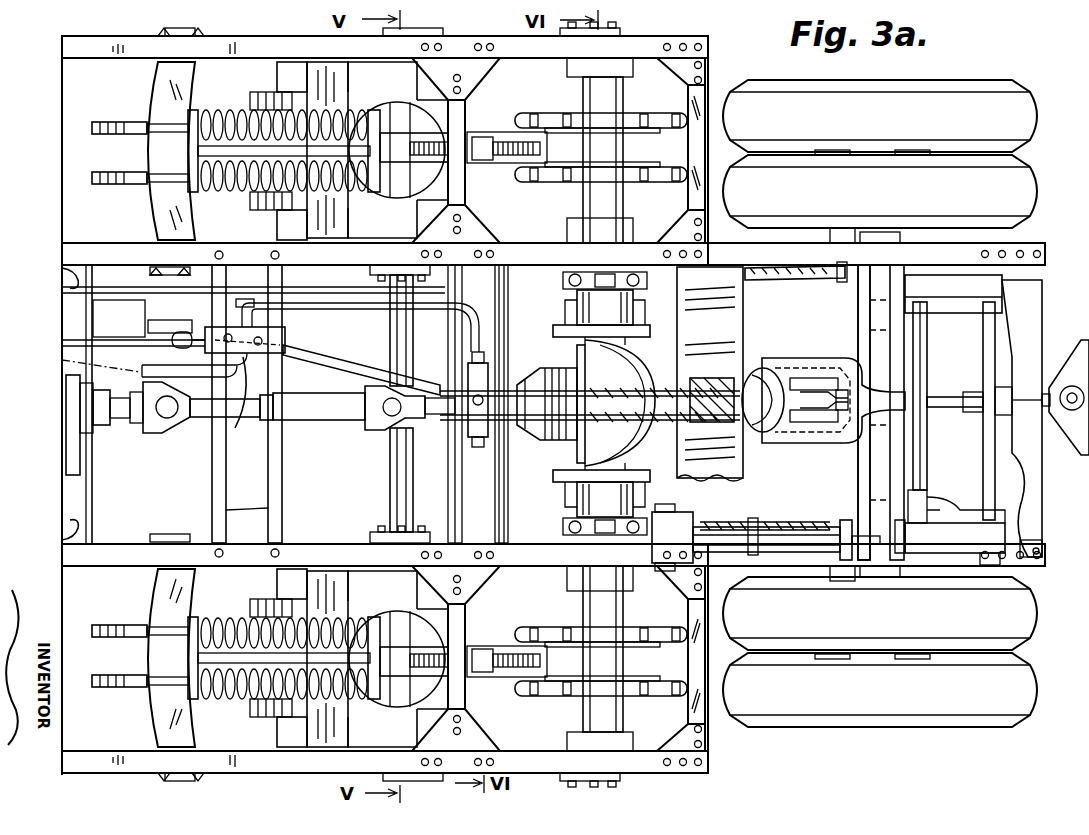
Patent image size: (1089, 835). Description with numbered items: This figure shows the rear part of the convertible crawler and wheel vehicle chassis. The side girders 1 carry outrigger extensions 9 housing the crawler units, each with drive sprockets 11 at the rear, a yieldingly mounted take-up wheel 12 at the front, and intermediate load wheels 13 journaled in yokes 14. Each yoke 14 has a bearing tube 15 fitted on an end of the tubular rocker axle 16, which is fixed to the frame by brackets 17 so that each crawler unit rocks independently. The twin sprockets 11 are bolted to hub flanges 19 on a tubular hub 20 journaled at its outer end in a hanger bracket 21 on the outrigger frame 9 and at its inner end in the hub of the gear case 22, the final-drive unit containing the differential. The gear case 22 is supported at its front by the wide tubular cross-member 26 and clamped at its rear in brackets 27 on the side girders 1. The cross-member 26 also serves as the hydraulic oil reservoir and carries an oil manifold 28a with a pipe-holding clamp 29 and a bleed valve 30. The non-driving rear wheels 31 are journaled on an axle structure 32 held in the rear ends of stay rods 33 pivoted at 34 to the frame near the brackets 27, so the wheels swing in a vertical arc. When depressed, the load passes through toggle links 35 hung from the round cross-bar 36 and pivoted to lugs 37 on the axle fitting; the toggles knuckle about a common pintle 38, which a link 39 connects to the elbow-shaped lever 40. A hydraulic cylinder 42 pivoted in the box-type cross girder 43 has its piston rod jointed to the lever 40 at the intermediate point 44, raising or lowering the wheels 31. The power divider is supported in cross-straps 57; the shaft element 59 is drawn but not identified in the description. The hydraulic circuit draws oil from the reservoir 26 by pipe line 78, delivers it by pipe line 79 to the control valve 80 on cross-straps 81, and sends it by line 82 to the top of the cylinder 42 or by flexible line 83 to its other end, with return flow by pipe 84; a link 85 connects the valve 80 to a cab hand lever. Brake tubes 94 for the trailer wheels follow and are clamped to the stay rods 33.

The side girders 1 is at (62, 252).
The outrigger extensions 9 is at (62, 52).
The drive sprockets 11 is at (656, 174).
The take-up wheels 12 is at (98, 180).
The intermediate load wheels 13 is at (250, 100).
The yokes 14 is at (282, 72).
The bearing tube 15 is at (405, 183).
The tubular axle or rocker beam 16 is at (400, 352).
The brackets 17 is at (374, 270).
The hub flanges 19 is at (556, 178).
The tubular hub 20 is at (607, 102).
The hanger bracket 21 is at (628, 32).
The gear case 22 is at (590, 310).
The cross-member 26 is at (492, 493).
The brackets 27 is at (566, 272).
The oil manifold 28a is at (468, 432).
The pipe-holding clamp 29 is at (556, 386).
The bleed valve 30 is at (476, 442).
The rear wheels 31 is at (1022, 178).
The axle structure 32 is at (872, 475).
The stay rods 33 is at (783, 516).
The pivot 34 is at (668, 514).
The toggle links 35 is at (972, 292).
The round cross-bar 36 is at (920, 353).
The lugs 37 is at (905, 562).
The pintle 38 is at (992, 368).
The link 39 is at (950, 403).
The elbow-shaped lever 40 is at (780, 366).
The hydraulic cylinder 42 is at (754, 388).
The box-type cross girder 43 is at (728, 333).
The intermediate point 44 is at (838, 413).
The cross-straps 57 is at (92, 503).
The drive shaft with universal joints 59 is at (143, 413).
The pipe line 78 is at (148, 290).
The pipe line 79 is at (236, 428).
The control valve 80 is at (288, 338).
The cross-straps 81 is at (268, 504).
The pipe line 82 is at (630, 389).
The flexible line 83 is at (672, 422).
The return pipe 84 is at (236, 306).
The link 85 is at (175, 342).
The flexible tubes 94 is at (800, 530).